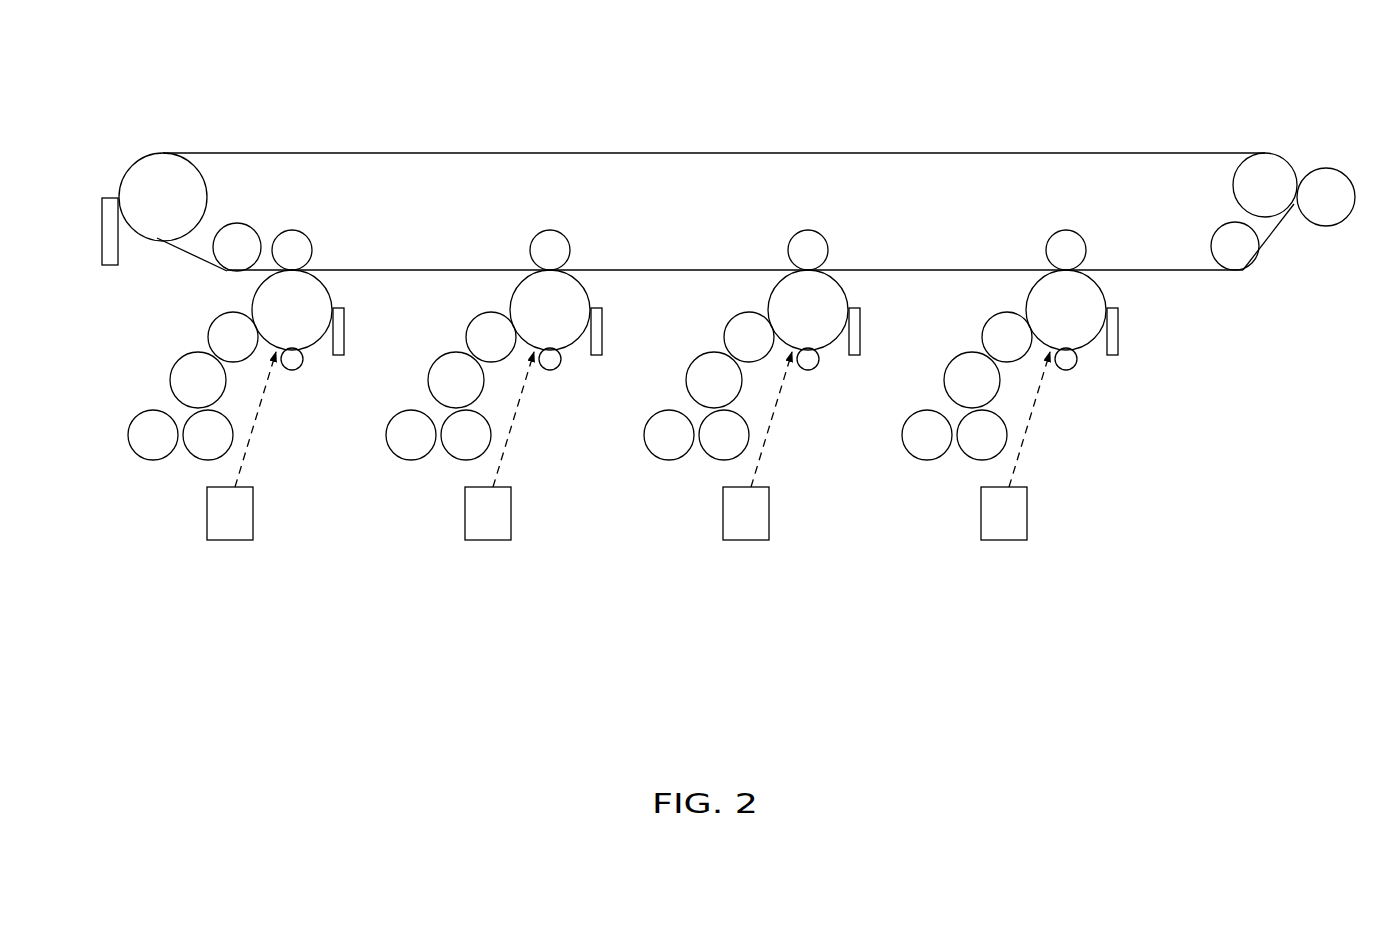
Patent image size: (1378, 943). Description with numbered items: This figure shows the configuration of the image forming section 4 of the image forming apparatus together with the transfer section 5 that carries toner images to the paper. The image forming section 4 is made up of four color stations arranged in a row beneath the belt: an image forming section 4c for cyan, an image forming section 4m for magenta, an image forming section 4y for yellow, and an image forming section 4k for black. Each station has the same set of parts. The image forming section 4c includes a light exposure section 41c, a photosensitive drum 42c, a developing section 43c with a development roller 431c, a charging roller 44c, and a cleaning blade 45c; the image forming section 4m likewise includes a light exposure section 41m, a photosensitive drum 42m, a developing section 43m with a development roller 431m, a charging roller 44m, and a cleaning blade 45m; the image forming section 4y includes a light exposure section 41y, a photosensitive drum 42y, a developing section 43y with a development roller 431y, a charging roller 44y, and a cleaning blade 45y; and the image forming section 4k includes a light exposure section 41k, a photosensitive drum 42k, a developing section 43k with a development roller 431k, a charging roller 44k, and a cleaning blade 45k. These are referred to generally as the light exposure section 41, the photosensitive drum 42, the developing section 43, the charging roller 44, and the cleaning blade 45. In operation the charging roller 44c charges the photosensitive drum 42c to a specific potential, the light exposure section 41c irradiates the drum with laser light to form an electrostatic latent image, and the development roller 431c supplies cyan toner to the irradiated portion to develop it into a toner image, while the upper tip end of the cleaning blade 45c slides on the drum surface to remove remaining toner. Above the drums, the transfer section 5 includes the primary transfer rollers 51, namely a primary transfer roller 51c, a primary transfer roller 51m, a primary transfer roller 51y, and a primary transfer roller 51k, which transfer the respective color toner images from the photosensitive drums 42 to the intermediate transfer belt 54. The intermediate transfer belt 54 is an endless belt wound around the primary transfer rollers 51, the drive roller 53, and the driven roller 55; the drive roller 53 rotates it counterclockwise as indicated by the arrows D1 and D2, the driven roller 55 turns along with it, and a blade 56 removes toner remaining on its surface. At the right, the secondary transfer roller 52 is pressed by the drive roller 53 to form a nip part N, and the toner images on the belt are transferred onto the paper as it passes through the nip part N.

The image forming section 4 is at (1245, 487).
The image forming section 4c is at (247, 449).
The image forming section 4m is at (505, 449).
The image forming section 4y is at (763, 449).
The image forming section 4k is at (1021, 449).
The transfer section 5 is at (279, 83).
The light exposure section 41 is at (223, 487).
The light exposure section 41c is at (223, 487).
The light exposure section 41m is at (481, 487).
The light exposure section 41y is at (739, 487).
The light exposure section 41k is at (997, 487).
The photosensitive drum 42 is at (320, 340).
The photosensitive drum 42c is at (320, 340).
The photosensitive drum 42m is at (578, 340).
The photosensitive drum 42y is at (836, 340).
The photosensitive drum 42k is at (1094, 340).
The developing section 43 is at (161, 462).
The developing section 43c is at (161, 462).
The developing section 43m is at (419, 462).
The developing section 43y is at (677, 462).
The developing section 43k is at (935, 462).
The development roller 431c is at (192, 330).
The development roller 431m is at (450, 330).
The development roller 431y is at (708, 330).
The development roller 431k is at (966, 330).
The charging roller 44 is at (306, 403).
The charging roller 44c is at (306, 403).
The charging roller 44m is at (564, 403).
The charging roller 44y is at (822, 403).
The charging roller 44k is at (1080, 403).
The cleaning blade 45 is at (360, 287).
The cleaning blade 45c is at (360, 287).
The cleaning blade 45m is at (618, 287).
The cleaning blade 45y is at (876, 287).
The cleaning blade 45k is at (1134, 287).
The primary transfer rollers 51 is at (268, 216).
The primary transfer roller 51c is at (268, 216).
The primary transfer roller 51m is at (526, 216).
The primary transfer roller 51y is at (784, 216).
The primary transfer roller 51k is at (1042, 216).
The secondary transfer roller 52 is at (1327, 167).
The drive roller 53 is at (1240, 170).
The intermediate transfer belt 54 is at (485, 153).
The driven roller 55 is at (158, 170).
The blade 56 is at (112, 198).
The nip part N is at (1296, 230).
The arrow D1 is at (758, 259).
The arrow D2 is at (760, 142).